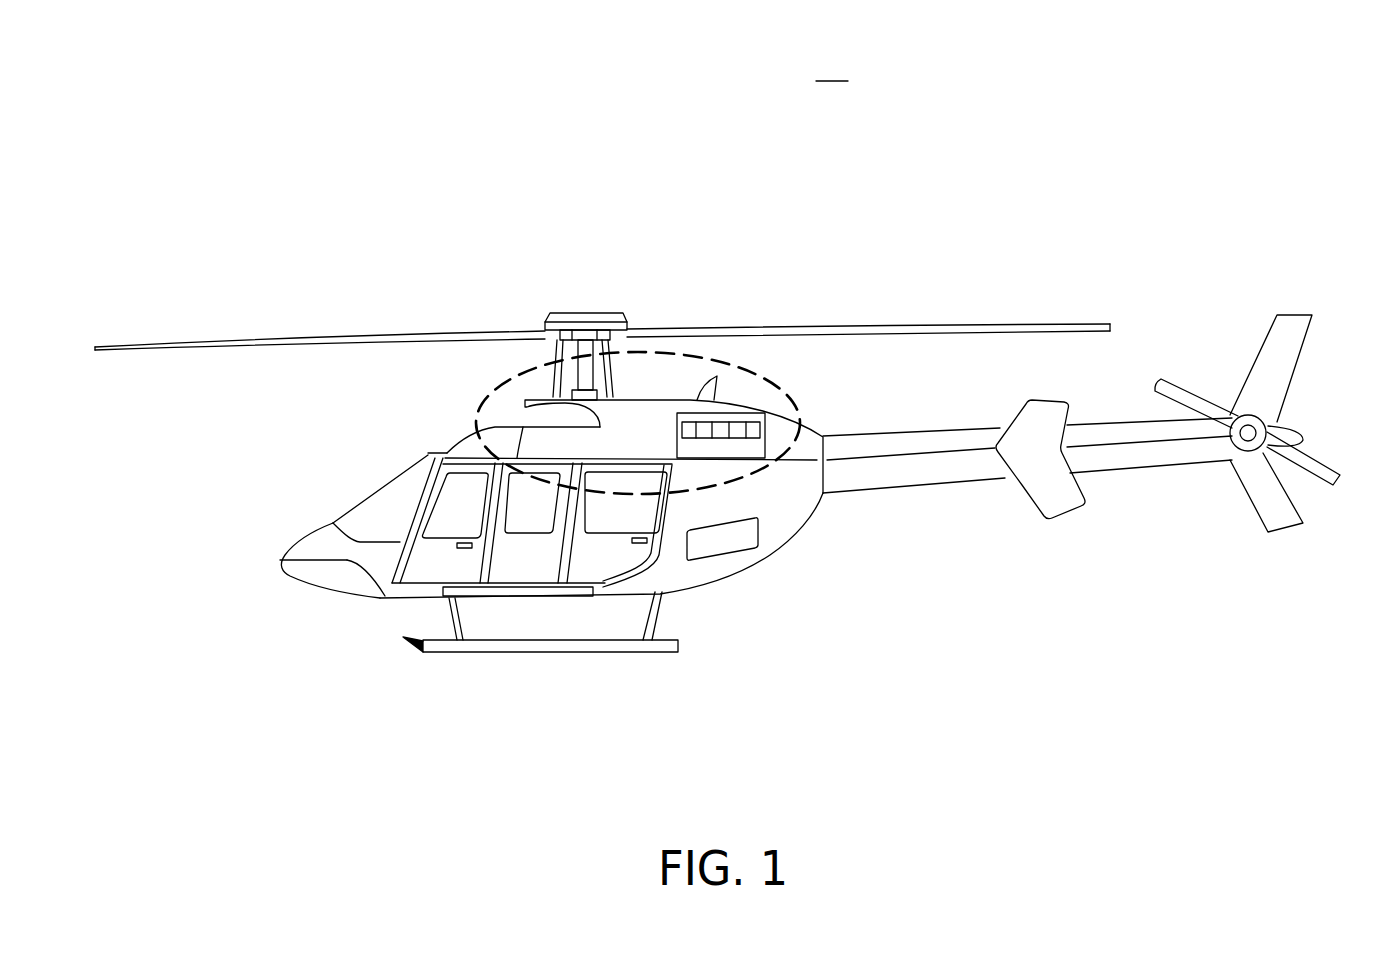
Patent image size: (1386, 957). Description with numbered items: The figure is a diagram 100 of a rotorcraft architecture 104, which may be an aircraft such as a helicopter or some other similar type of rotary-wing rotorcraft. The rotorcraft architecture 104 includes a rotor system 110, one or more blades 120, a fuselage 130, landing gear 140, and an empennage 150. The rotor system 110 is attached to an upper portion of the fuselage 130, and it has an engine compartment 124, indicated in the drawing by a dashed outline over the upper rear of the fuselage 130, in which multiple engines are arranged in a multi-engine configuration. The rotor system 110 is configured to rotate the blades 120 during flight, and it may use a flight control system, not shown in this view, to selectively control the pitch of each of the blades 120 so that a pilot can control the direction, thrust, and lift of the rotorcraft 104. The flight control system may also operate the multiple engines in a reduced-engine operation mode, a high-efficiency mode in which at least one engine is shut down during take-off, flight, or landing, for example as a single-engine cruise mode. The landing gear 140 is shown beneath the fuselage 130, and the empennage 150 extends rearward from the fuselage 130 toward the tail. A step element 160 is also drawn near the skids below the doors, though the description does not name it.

The diagram 100 is at (217, 54).
The rotorcraft architecture 104 is at (725, 72).
The rotor system 110 is at (582, 312).
The blades 120 is at (847, 325).
The engine compartment 124 is at (787, 402).
The fuselage 130 is at (330, 590).
The landing gear 140 is at (563, 652).
The empennage 150 is at (897, 488).
The step plate 160 is at (532, 590).